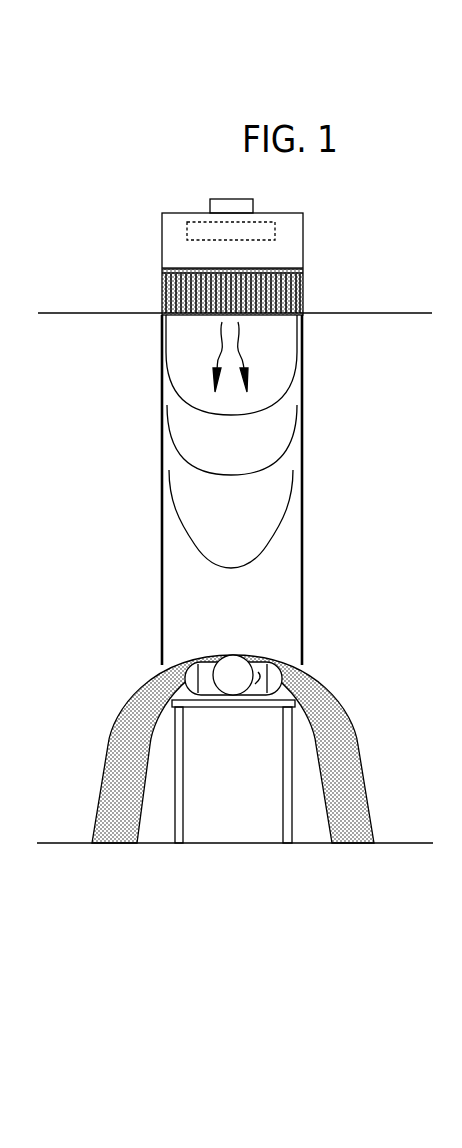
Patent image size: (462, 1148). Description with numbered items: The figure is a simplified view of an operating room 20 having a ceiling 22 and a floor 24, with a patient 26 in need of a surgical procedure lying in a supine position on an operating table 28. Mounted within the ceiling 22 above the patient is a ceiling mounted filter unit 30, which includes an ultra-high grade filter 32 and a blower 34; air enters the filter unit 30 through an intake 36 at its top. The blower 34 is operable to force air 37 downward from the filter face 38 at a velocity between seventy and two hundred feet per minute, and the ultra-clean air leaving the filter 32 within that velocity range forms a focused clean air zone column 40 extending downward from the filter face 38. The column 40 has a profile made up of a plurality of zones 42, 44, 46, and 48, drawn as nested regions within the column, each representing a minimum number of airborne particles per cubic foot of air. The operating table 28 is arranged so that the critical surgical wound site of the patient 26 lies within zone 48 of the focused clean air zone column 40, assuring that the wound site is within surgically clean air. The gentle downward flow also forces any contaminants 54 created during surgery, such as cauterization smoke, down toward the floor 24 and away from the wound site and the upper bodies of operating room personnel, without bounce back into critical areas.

The operating room 20 is at (260, 490).
The ceiling 22 is at (432, 313).
The floor 24 is at (397, 843).
The patient 26 is at (292, 665).
The operating table 28 is at (343, 708).
The ceiling mounted filter unit 30 is at (258, 212).
The ultra-high grade filter 32 is at (303, 290).
The blower 34 is at (162, 233).
The intake 36 is at (213, 199).
The air 37 is at (243, 348).
The filter face 38 is at (252, 318).
The focused clean air zone column 40 is at (347, 528).
The zone 42 is at (178, 347).
The zone 44 is at (178, 412).
The zone 46 is at (195, 522).
The zone 48 is at (210, 595).
The contaminants 54 is at (128, 712).